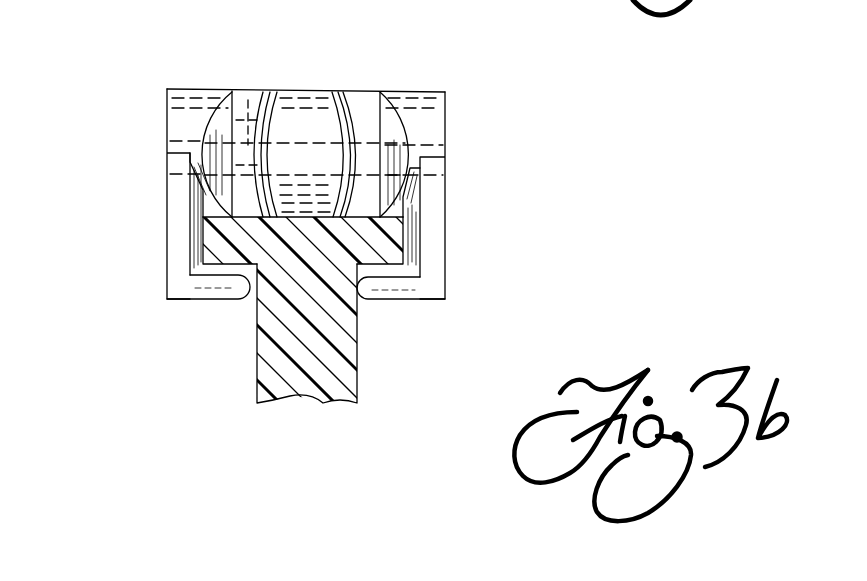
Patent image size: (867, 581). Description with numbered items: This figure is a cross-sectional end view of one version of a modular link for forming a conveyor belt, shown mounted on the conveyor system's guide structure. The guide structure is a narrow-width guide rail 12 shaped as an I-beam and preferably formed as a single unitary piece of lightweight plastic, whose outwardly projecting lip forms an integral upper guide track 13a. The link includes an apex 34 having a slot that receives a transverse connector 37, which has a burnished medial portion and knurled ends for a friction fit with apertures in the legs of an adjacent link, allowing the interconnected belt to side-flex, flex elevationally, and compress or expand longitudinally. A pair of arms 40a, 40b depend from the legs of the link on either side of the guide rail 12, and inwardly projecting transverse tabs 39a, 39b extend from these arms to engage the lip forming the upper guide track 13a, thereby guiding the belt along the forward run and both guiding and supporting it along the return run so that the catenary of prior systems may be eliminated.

The guide rail 12 is at (265, 372).
The upper guide track 13a is at (360, 250).
The apex 34 is at (310, 98).
The transverse connector 37 is at (247, 97).
The transverse tab 39a is at (227, 292).
The transverse tab 39b is at (403, 300).
The arm 40a is at (177, 225).
The arm 40b is at (432, 210).